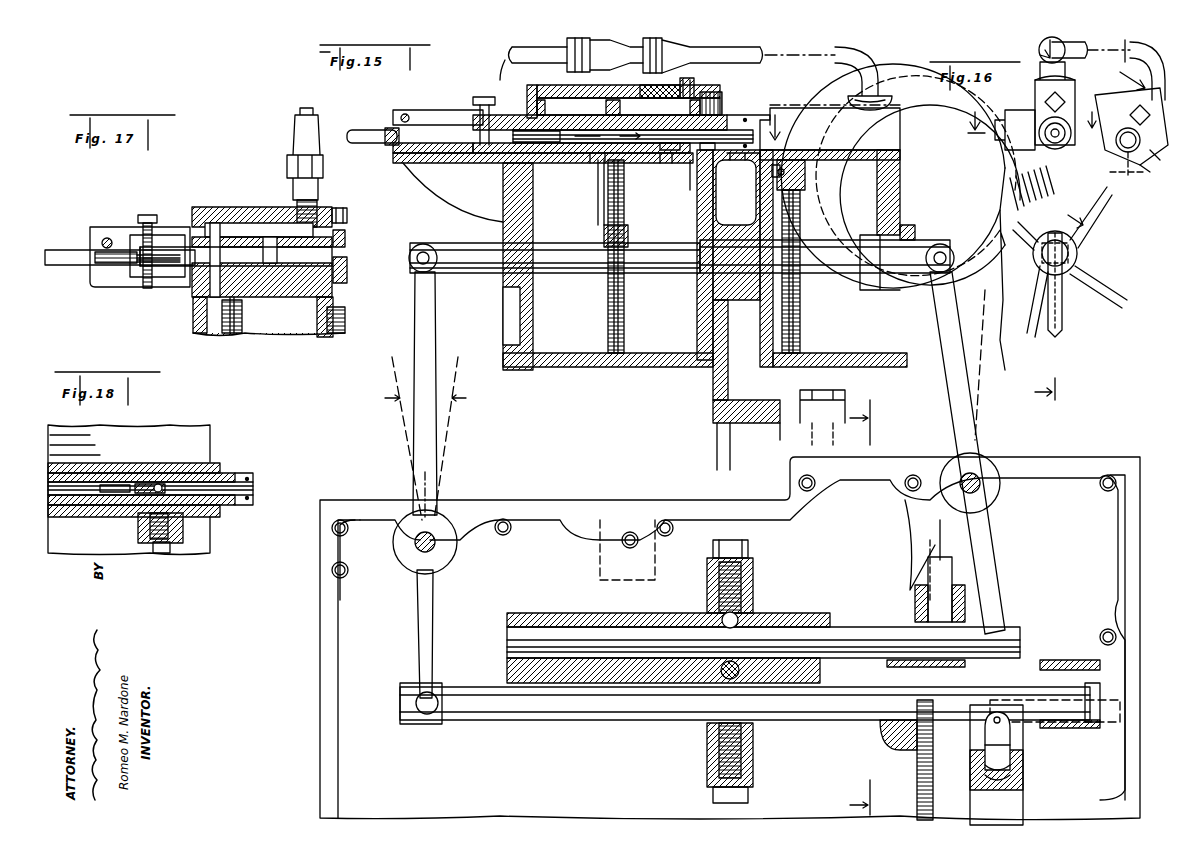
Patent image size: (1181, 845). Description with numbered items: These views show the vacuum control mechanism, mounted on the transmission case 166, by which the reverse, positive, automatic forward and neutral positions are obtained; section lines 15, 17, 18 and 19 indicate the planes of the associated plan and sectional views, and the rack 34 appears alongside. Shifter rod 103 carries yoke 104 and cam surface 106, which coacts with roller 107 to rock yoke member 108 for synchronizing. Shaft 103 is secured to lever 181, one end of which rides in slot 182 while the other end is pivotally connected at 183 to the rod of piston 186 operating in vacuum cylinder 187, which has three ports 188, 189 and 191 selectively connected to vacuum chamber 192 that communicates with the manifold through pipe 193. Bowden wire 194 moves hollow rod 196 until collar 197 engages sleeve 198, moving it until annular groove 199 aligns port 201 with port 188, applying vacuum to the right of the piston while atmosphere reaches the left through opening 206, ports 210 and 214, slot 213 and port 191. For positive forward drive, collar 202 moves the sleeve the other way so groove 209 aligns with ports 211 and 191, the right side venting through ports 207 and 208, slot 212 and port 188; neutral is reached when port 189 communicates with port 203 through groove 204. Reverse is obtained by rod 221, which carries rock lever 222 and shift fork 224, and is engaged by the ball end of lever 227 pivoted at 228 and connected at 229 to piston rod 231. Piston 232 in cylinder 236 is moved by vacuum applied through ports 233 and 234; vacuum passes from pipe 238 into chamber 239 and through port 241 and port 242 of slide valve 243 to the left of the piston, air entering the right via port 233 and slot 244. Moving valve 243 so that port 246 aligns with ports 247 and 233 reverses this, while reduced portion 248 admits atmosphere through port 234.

In FIG. 16, the section line 15 is at (1032, 225).
In FIG. 16, the section line 17 is at (1101, 150).
In FIG. 15, the section line 18 is at (676, 127).
In FIG. 16, the section line 18 is at (1041, 118).
In FIG. 15, the section line 19 is at (858, 607).
In FIG. 15, the rack bar 34 is at (497, 262).
In FIG. 15, the shifter rod 103 is at (805, 698).
In FIG. 15, the yoke 104 is at (917, 764).
In FIG. 15, the cam surface 106 is at (1030, 700).
In FIG. 15, the roller 107 is at (1015, 728).
In FIG. 15, the yoke member 108 is at (980, 730).
In FIG. 15, the transmission case 166 is at (683, 500).
In FIG. 15, the lever 181 is at (437, 334).
In FIG. 15, the slot 182 is at (420, 726).
In FIG. 15, the pivot 183 is at (416, 266).
In FIG. 15, the piston 186 is at (626, 327).
In FIG. 15, the vacuum cylinder 187 is at (586, 316).
In FIG. 15, the port 188 is at (688, 190).
In FIG. 15, the port 189 is at (628, 170).
In FIG. 15, the port 191 is at (555, 170).
In FIG. 15, the vacuum chamber 192 is at (693, 86).
In FIG. 15, the pipe 193 is at (505, 63).
In FIG. 15, the Bowden wire 194 is at (370, 126).
In FIG. 15, the hollow rod 196 is at (768, 108).
In FIG. 16, the hollow rod 196 is at (1040, 130).
In FIG. 18, the hollow rod 196 is at (248, 478).
In FIG. 15, the collar 197 is at (745, 118).
In FIG. 16, the collar 197 is at (1045, 120).
In FIG. 18, the collar 197 is at (248, 500).
In FIG. 15, the sleeve 198 is at (738, 165).
In FIG. 16, the sleeve 198 is at (1008, 150).
In FIG. 18, the sleeve 198 is at (225, 517).
In FIG. 15, the annular groove 199 is at (716, 178).
In FIG. 18, the annular groove 199 is at (205, 520).
In FIG. 15, the port 201 is at (722, 100).
In FIG. 15, the collar 202 is at (498, 115).
In FIG. 15, the port 203 is at (642, 100).
In FIG. 15, the groove 204 is at (593, 165).
In FIG. 18, the groove 204 is at (122, 468).
In FIG. 15, the opening 206 is at (752, 138).
In FIG. 16, the opening 206 is at (1058, 145).
In FIG. 18, the opening 206 is at (262, 490).
In FIG. 15, the port 207 is at (709, 139).
In FIG. 18, the port 207 is at (164, 489).
In FIG. 15, the port 208 is at (666, 139).
In FIG. 15, the groove 209 is at (530, 110).
In FIG. 15, the port 210 is at (572, 135).
In FIG. 15, the port 211 is at (575, 98).
In FIG. 15, the slot 212 is at (666, 163).
In FIG. 18, the slot 212 is at (111, 489).
In FIG. 15, the slot 213 is at (604, 165).
In FIG. 15, the port 214 is at (536, 136).
In FIG. 15, the shifter rod 221 is at (872, 638).
In FIG. 15, the rock lever 222 is at (915, 575).
In FIG. 16, the shift fork 224 is at (1116, 146).
In FIG. 15, the lever 227 is at (998, 573).
In FIG. 16, the lever 227 is at (1062, 320).
In FIG. 15, the pivot 228 is at (980, 480).
In FIG. 15, the pivot 229 is at (940, 250).
In FIG. 16, the pivot 229 is at (1068, 258).
In FIG. 15, the piston rod 231 is at (873, 257).
In FIG. 16, the piston rod 231 is at (1077, 250).
In FIG. 15, the piston 232 is at (803, 327).
In FIG. 17, the piston 232 is at (236, 323).
In FIG. 15, the port 233 is at (855, 180).
In FIG. 16, the port 233 is at (1151, 173).
In FIG. 17, the port 233 is at (305, 300).
In FIG. 15, the port 234 is at (784, 172).
In FIG. 17, the port 234 is at (193, 326).
In FIG. 15, the cylinder 236 is at (857, 299).
In FIG. 16, the cylinder 236 is at (1100, 340).
In FIG. 17, the cylinder 236 is at (255, 335).
In FIG. 18, the cylinder 236 is at (192, 445).
In FIG. 15, the pipe 238 is at (860, 60).
In FIG. 16, the pipe 238 is at (1125, 50).
In FIG. 17, the pipe 238 is at (300, 112).
In FIG. 16, the chamber 239 is at (1115, 100).
In FIG. 17, the chamber 239 is at (240, 212).
In FIG. 17, the port 241 is at (185, 225).
In FIG. 17, the port 242 is at (200, 275).
In FIG. 16, the slide valve 243 is at (1154, 159).
In FIG. 17, the slide valve 243 is at (345, 240).
In FIG. 17, the slot 244 is at (347, 270).
In FIG. 17, the port 246 is at (270, 237).
In FIG. 17, the port 247 is at (350, 214).
In FIG. 17, the reduced portion 248 is at (160, 283).